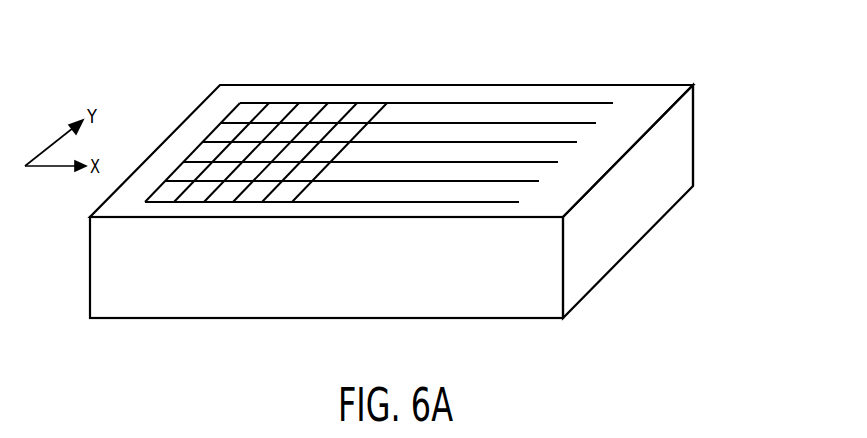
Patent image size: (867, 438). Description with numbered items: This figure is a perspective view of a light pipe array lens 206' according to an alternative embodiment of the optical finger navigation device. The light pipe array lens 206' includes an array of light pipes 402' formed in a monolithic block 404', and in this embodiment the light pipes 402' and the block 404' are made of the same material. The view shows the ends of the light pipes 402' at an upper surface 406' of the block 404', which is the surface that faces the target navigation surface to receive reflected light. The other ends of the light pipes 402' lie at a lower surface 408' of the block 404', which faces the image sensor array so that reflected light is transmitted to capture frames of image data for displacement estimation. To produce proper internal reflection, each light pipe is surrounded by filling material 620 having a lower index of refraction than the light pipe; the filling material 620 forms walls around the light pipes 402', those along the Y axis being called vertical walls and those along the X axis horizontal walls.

The light pipe array lens 206' is at (750, 56).
The light pipes 402' is at (266, 108).
The monolithic block 404' is at (727, 155).
The upper surface 406' is at (456, 59).
The lower surface 408' is at (416, 204).
The filling material 620 is at (158, 187).